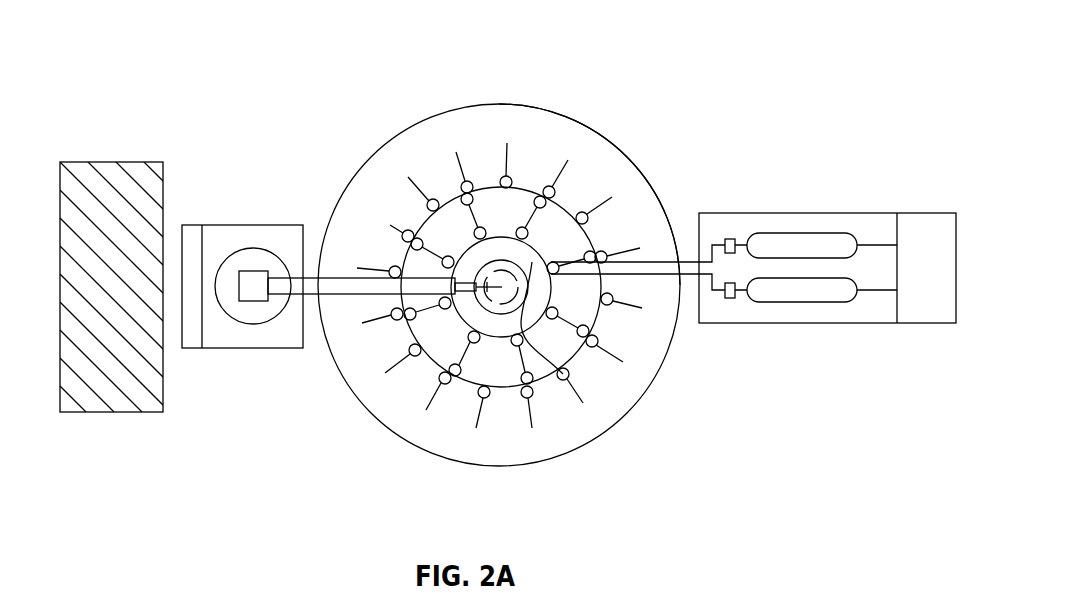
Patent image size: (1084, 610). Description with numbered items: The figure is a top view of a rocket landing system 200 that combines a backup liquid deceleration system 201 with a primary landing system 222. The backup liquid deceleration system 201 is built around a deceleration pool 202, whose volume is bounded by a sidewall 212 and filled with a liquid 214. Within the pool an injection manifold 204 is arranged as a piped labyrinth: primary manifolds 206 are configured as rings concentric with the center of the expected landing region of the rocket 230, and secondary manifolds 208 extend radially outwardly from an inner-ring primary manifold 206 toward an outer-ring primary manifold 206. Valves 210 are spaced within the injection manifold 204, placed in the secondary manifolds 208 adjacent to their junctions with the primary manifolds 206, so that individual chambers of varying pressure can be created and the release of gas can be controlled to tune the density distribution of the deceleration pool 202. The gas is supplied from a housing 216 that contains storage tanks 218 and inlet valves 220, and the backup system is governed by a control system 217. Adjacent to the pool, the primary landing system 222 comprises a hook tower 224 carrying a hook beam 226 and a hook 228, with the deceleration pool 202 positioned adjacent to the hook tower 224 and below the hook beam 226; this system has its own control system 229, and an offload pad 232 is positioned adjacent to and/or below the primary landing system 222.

The rocket landing system 200 is at (133, 43).
The backup liquid deceleration system 201 is at (726, 36).
The deceleration pool 202 is at (664, 395).
The injection manifold 204 is at (532, 172).
The primary manifolds 206 is at (501, 236).
The secondary manifolds 208 is at (455, 370).
The valves 210 is at (517, 346).
The sidewall 212 is at (623, 148).
The liquid 214 is at (410, 155).
The housing 216 is at (868, 323).
The control system 217 is at (915, 237).
The storage tanks 218 is at (790, 295).
The inlet valves 220 is at (727, 255).
The primary landing system 222 is at (254, 360).
The hook tower 224 is at (251, 246).
The hook beam 226 is at (345, 278).
The hook 228 is at (457, 295).
The control system 229 is at (197, 240).
The rocket 230 is at (563, 374).
The offload pad 232 is at (112, 385).